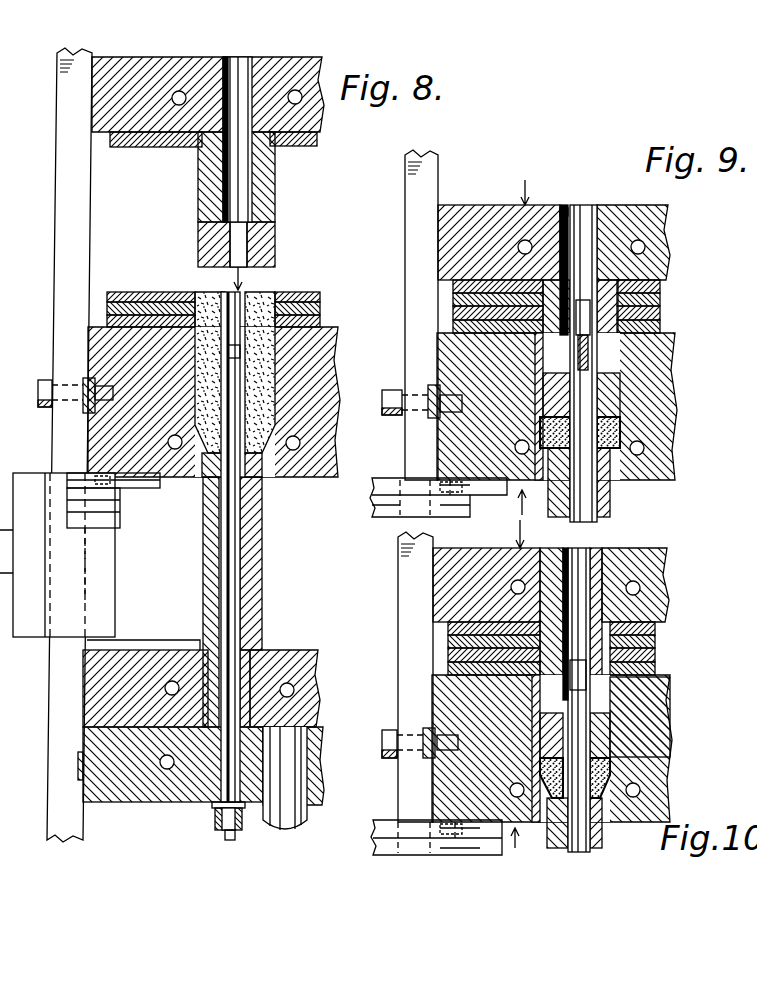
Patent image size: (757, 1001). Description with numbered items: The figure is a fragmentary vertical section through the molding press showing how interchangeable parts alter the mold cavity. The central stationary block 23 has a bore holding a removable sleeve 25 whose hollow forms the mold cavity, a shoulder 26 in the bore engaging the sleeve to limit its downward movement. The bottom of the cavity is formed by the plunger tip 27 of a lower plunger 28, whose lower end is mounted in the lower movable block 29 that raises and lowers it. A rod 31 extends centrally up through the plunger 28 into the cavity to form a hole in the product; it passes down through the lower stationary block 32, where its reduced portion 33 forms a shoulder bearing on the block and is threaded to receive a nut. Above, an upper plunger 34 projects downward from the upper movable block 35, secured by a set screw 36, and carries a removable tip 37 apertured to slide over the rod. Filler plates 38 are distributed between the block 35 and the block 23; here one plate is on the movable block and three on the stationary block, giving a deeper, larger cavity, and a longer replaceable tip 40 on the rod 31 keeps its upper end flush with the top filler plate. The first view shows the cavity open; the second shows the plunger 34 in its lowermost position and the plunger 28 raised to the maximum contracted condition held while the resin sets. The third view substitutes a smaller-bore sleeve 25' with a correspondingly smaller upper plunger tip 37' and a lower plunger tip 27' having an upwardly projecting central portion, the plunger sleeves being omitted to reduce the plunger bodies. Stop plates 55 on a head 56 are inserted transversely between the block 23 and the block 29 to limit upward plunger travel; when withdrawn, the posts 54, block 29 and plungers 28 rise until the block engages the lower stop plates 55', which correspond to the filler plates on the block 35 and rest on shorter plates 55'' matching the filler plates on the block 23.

In FIG. 8, the stationary block 23 is at (338, 370).
In FIG. 9, the stationary block 23 is at (652, 480).
In FIG. 10, the stationary block 23 is at (455, 797).
In FIG. 8, the removable sleeve 25 is at (281, 372).
In FIG. 9, the removable sleeve 25 is at (621, 430).
In FIG. 10, the mold cavity sleeve 25' is at (623, 749).
In FIG. 8, the shoulder 26 is at (195, 477).
In FIG. 9, the shoulder 26 is at (640, 455).
In FIG. 10, the shoulder 26 is at (640, 802).
In FIG. 8, the plunger tip 27 is at (273, 477).
In FIG. 9, the plunger tip 27 is at (630, 496).
In FIG. 10, the plunger tip 27' is at (532, 844).
In FIG. 8, the lower plunger 28 is at (203, 550).
In FIG. 9, the lower plunger 28 is at (610, 516).
In FIG. 10, the lower plunger 28 is at (605, 848).
In FIG. 8, the lower movable block 29 is at (314, 650).
In FIG. 8, the rod 31 is at (203, 627).
In FIG. 9, the rod 31 is at (560, 508).
In FIG. 10, the rod 31 is at (580, 840).
In FIG. 8, the lower stationary block 32 is at (95, 805).
In FIG. 8, the reduced portion 33 is at (212, 802).
In FIG. 8, the upper plunger 34 is at (275, 198).
In FIG. 9, the upper plunger 34 is at (620, 372).
In FIG. 10, the upper plunger 34 is at (571, 630).
In FIG. 8, the upper movable block 35 is at (322, 122).
In FIG. 9, the upper movable block 35 is at (486, 206).
In FIG. 10, the upper movable block 35 is at (482, 548).
In FIG. 9, the set screw 36 is at (563, 208).
In FIG. 8, the removable tip 37 is at (255, 244).
In FIG. 9, the removable tip 37 is at (623, 395).
In FIG. 10, the plunger tip 37' is at (623, 737).
In FIG. 8, the filler plate 38 is at (316, 147).
In FIG. 9, the filler plate 38 is at (660, 326).
In FIG. 10, the filler plate 38 is at (655, 668).
In FIG. 8, the replaceable tip 40 is at (225, 293).
In FIG. 9, the replaceable tip 40 is at (668, 280).
In FIG. 10, the replaceable tip 40 is at (660, 692).
In FIG. 8, the post 54 is at (300, 815).
In FIG. 8, the stop plate 55 is at (95, 487).
In FIG. 9, the stop plate 55 is at (415, 465).
In FIG. 10, the stop plate 55 is at (420, 744).
In FIG. 8, the lower stop plate 55' is at (55, 506).
In FIG. 9, the lower stop plate 55' is at (438, 480).
In FIG. 8, the shorter plate 55'' is at (117, 500).
In FIG. 9, the shorter plate 55'' is at (472, 500).
In FIG. 10, the shorter plate 55'' is at (425, 837).
In FIG. 8, the head 56 is at (30, 475).